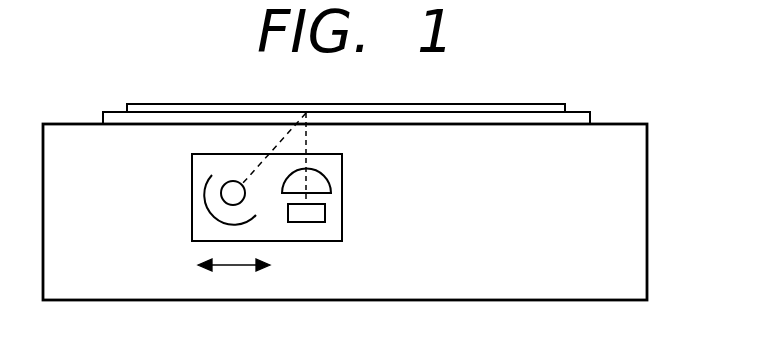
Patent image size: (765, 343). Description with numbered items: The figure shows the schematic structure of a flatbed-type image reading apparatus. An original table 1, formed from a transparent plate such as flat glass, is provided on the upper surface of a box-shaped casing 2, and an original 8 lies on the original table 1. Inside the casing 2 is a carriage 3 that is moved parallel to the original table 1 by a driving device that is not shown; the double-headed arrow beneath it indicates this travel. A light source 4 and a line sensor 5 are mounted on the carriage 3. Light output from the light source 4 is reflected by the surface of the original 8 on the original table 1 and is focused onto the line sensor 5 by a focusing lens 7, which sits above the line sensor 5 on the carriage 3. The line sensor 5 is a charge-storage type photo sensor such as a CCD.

The original table 1 is at (582, 105).
The casing 2 is at (628, 117).
The carriage 3 is at (342, 158).
The light source 4 is at (222, 200).
The line sensor 5 is at (325, 212).
The focusing lens 7 is at (331, 181).
The original 8 is at (530, 96).